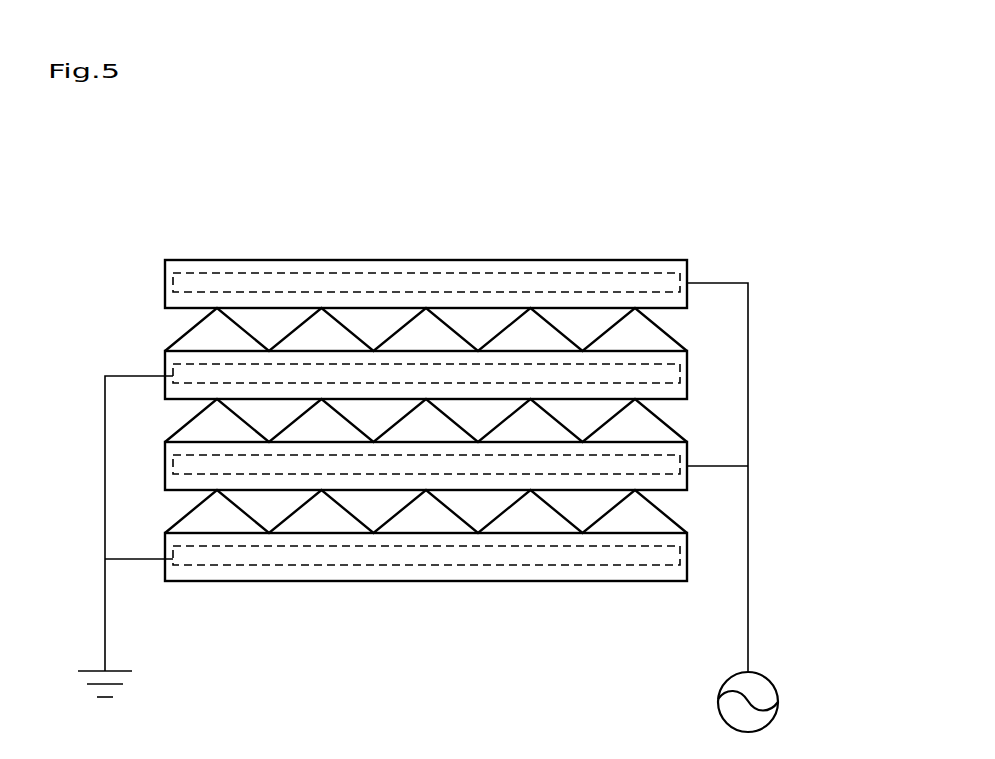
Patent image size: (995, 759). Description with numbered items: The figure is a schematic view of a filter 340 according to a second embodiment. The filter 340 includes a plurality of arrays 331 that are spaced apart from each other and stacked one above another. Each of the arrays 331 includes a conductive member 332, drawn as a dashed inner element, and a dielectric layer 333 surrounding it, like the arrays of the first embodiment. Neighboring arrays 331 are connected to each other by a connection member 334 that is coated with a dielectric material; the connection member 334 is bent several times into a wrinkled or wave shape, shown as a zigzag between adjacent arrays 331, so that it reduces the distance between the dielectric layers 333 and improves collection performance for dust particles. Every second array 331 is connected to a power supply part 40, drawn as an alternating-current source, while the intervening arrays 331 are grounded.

The filter 340 is at (238, 172).
The array 331 is at (582, 243).
The conductive member 332 is at (325, 272).
The dielectric layer 333 is at (481, 259).
The connection member 334 is at (182, 335).
The power supply part 40 is at (774, 684).